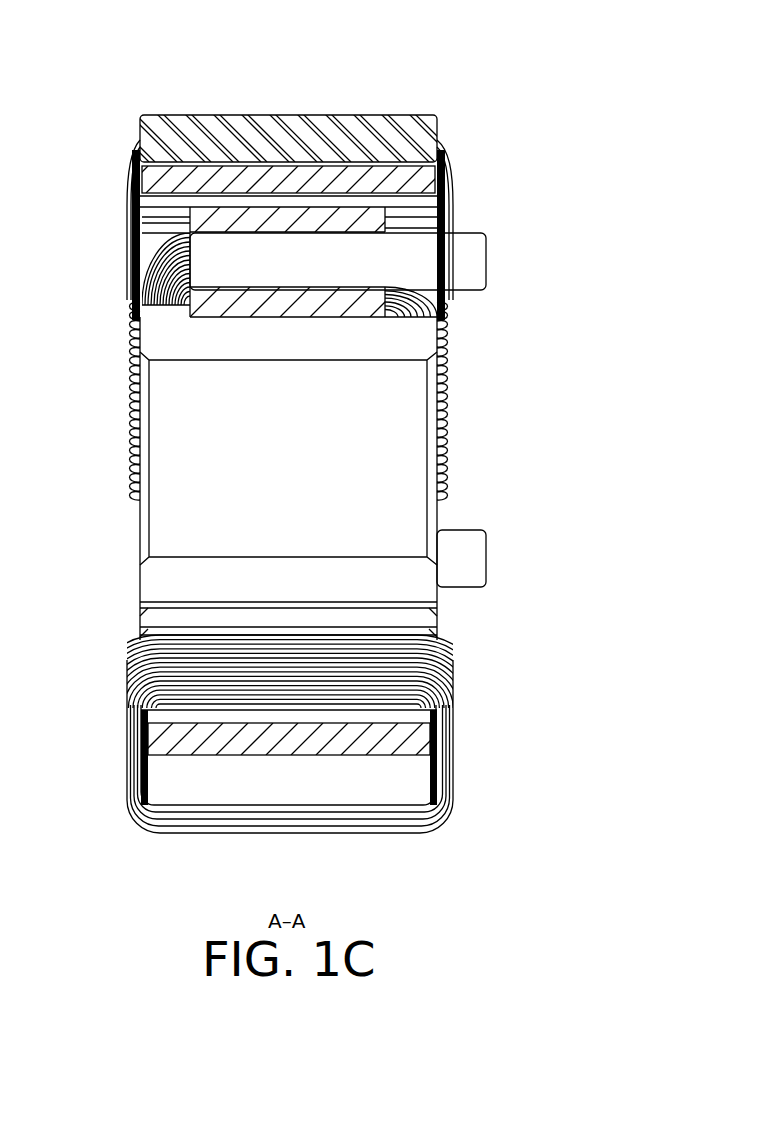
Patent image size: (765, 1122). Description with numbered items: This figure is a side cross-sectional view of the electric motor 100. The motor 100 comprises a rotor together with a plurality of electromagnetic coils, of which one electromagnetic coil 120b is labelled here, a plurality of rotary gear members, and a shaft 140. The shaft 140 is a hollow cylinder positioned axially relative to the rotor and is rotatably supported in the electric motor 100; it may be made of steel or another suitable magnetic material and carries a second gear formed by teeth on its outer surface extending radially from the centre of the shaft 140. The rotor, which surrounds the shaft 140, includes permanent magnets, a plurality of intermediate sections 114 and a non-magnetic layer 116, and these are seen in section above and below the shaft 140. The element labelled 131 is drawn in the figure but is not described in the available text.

The electric motor 100 is at (459, 92).
The non-magnetic layer 116 is at (150, 176).
The coil end connector blocks 131 is at (487, 262).
The shaft 140 is at (152, 578).
The intermediate sections 114 is at (157, 779).
The electromagnetic coil 120b is at (175, 834).